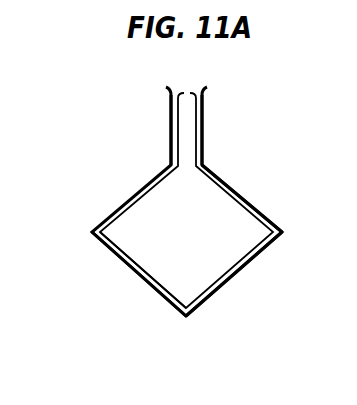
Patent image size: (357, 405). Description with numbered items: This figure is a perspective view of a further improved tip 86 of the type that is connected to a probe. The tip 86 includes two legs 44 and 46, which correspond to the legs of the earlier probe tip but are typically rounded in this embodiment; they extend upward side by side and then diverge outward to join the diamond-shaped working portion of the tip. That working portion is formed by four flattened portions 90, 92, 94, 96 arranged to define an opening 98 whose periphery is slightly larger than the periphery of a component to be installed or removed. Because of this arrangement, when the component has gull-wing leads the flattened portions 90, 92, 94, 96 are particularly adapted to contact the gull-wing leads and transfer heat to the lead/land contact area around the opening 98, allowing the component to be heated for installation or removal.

The tip 86 is at (106, 187).
The leg 44 is at (169, 128).
The leg 46 is at (207, 125).
The flattened portion 90 is at (245, 196).
The flattened portion 92 is at (240, 271).
The flattened portion 94 is at (144, 278).
The flattened portion 96 is at (131, 207).
The opening 98 is at (170, 255).